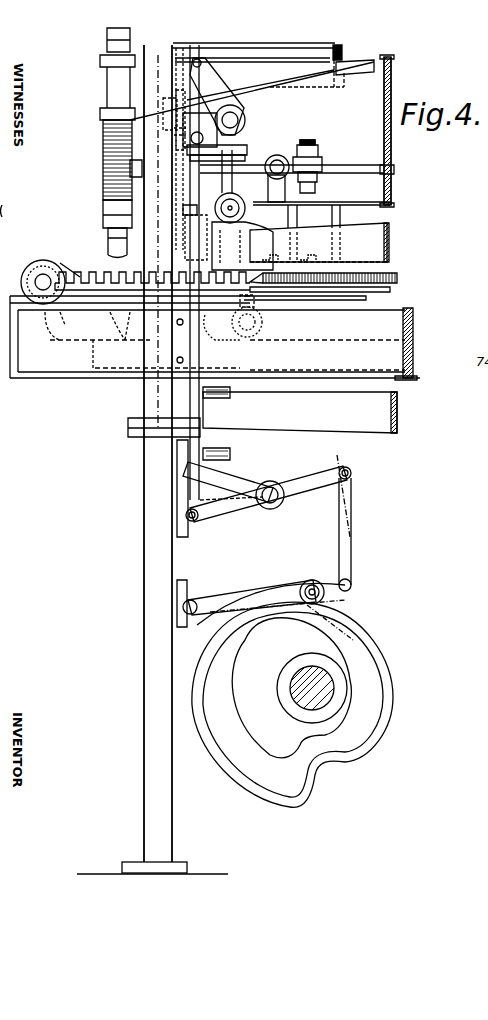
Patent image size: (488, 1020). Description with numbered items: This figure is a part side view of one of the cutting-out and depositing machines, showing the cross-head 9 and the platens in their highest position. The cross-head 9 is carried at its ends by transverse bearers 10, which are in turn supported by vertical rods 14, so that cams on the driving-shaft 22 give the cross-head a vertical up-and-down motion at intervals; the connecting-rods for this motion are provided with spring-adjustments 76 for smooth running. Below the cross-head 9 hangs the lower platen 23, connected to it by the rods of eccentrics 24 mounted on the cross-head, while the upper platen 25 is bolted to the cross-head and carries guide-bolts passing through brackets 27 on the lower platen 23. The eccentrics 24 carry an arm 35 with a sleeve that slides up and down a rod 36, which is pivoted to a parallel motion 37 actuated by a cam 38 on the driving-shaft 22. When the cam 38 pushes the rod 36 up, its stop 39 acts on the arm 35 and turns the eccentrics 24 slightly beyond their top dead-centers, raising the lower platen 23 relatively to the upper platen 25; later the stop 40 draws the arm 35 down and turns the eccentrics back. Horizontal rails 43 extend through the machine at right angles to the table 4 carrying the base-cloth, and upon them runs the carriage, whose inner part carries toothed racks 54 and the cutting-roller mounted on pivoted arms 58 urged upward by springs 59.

The table 4 is at (300, 423).
The cross-head 9 is at (283, 125).
The transverse bearer 10 is at (108, 85).
The vertical rod 14 is at (108, 243).
The driving-shaft 22 is at (293, 690).
The lower platen 23 is at (319, 242).
The eccentric 24 is at (246, 118).
The upper platen 25 is at (292, 184).
The bracket 27 is at (185, 216).
The arm 35 is at (200, 108).
The rod 36 is at (193, 243).
The parallel motion 37 is at (337, 523).
The cam 38 is at (335, 612).
The stop 39 is at (212, 264).
The stop 40 is at (195, 128).
The horizontal rail 43 is at (215, 326).
The toothed rack 54 is at (78, 270).
The pivoted arm 58 is at (257, 307).
The spring 59 is at (407, 278).
The spring-adjustment 76 is at (102, 180).